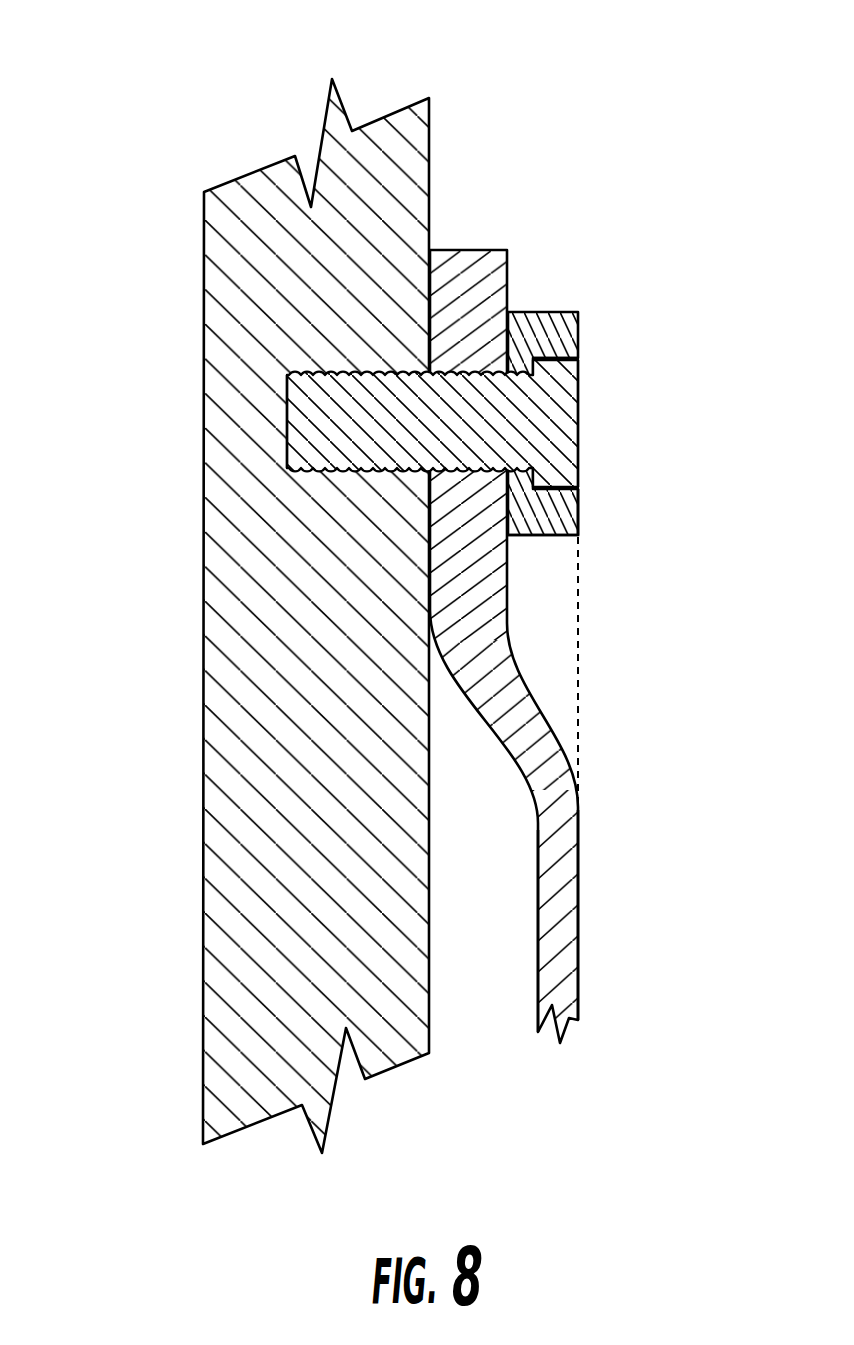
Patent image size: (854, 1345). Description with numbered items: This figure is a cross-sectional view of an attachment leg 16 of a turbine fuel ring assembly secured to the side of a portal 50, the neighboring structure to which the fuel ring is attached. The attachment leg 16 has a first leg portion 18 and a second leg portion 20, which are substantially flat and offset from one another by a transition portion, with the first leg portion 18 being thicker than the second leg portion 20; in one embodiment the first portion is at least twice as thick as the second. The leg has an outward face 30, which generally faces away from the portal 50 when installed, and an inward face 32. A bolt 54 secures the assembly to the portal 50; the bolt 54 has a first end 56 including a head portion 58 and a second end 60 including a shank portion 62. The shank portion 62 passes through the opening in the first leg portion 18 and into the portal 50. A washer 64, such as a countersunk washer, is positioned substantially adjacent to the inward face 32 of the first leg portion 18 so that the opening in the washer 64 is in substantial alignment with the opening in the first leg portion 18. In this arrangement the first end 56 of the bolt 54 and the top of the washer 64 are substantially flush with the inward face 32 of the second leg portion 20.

The attachment leg 16 is at (406, 566).
The first leg portion 18 is at (468, 285).
The second leg portion 20 is at (578, 857).
The outward face 30 is at (538, 937).
The inward face 32 is at (578, 945).
The portal 50 is at (245, 310).
The bolt 54 is at (582, 393).
The first end 56 is at (578, 422).
The head portion 58 is at (578, 455).
The second end 60 is at (287, 412).
The shank portion 62 is at (330, 438).
The washer 64 is at (578, 515).